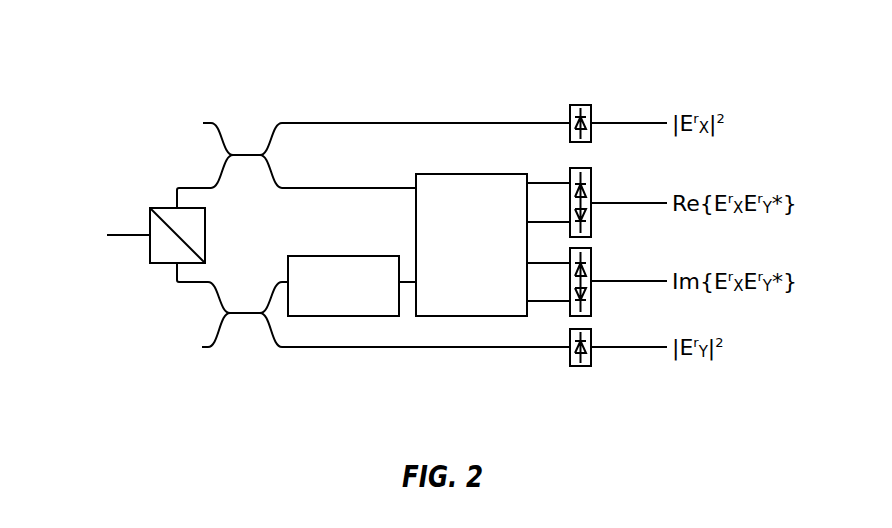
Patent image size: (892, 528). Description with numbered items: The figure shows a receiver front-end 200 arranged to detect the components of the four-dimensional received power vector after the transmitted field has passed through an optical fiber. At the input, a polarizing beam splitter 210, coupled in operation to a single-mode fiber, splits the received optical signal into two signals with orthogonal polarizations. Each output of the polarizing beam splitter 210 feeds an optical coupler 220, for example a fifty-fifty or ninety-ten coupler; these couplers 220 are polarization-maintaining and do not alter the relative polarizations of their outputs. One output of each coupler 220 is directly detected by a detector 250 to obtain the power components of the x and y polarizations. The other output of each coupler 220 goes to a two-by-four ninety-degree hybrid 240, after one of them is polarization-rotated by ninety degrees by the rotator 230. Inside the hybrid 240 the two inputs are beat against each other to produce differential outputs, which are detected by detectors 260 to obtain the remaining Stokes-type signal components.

The receiver front-end 200 is at (202, 412).
The polarizing beam splitter 210 is at (159, 210).
The optical coupler 220 is at (222, 163).
The rotator 230 is at (340, 253).
The 2×4 90° hybrid 240 is at (480, 173).
The detector 250 is at (592, 113).
The detector 260 is at (592, 172).